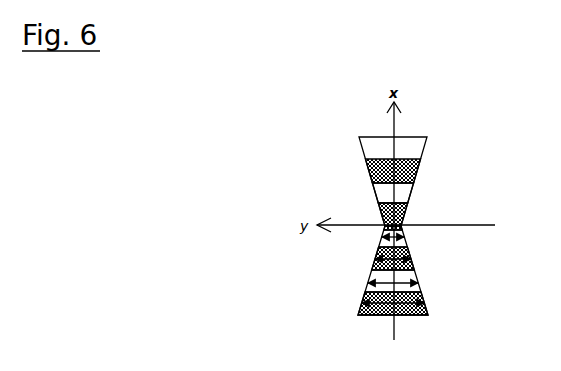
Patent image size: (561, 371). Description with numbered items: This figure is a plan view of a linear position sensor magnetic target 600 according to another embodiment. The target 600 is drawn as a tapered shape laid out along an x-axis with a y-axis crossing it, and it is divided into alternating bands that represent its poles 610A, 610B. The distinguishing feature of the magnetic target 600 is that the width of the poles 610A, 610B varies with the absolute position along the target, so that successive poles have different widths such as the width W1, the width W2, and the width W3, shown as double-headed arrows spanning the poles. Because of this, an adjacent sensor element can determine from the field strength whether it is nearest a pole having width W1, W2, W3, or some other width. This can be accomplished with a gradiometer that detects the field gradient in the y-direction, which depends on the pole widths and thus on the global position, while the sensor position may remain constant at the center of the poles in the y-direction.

The magnetic target 600 is at (290, 154).
The pole 610A is at (407, 168).
The pole 610B is at (398, 193).
The width W1 is at (414, 260).
The width W2 is at (415, 283).
The width W3 is at (422, 301).